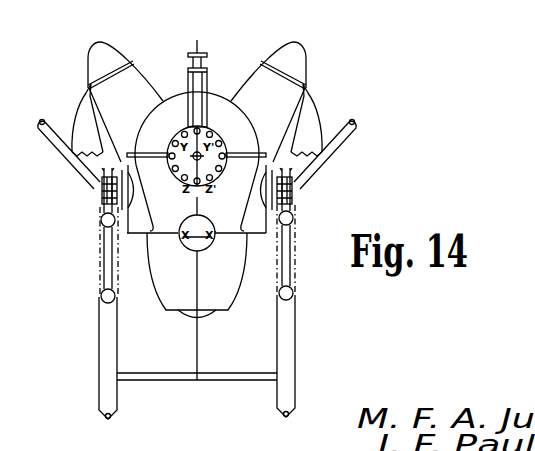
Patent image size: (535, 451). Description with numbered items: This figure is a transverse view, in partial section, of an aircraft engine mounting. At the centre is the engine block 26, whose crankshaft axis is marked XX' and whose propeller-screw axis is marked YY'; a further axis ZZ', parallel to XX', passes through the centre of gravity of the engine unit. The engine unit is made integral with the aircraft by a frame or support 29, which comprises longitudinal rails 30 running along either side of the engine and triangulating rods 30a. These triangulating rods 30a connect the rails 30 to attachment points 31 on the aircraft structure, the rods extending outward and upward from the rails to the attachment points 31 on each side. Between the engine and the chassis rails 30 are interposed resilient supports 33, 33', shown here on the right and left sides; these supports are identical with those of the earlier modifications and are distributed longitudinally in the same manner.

The engine block 26 is at (250, 73).
The frame or support 29 is at (104, 256).
The longitudinal rails 30 is at (101, 222).
The triangulating rods 30a is at (72, 165).
The attachment points 31 is at (42, 119).
The resilient support 33 is at (295, 183).
The resilient support 33' is at (80, 202).